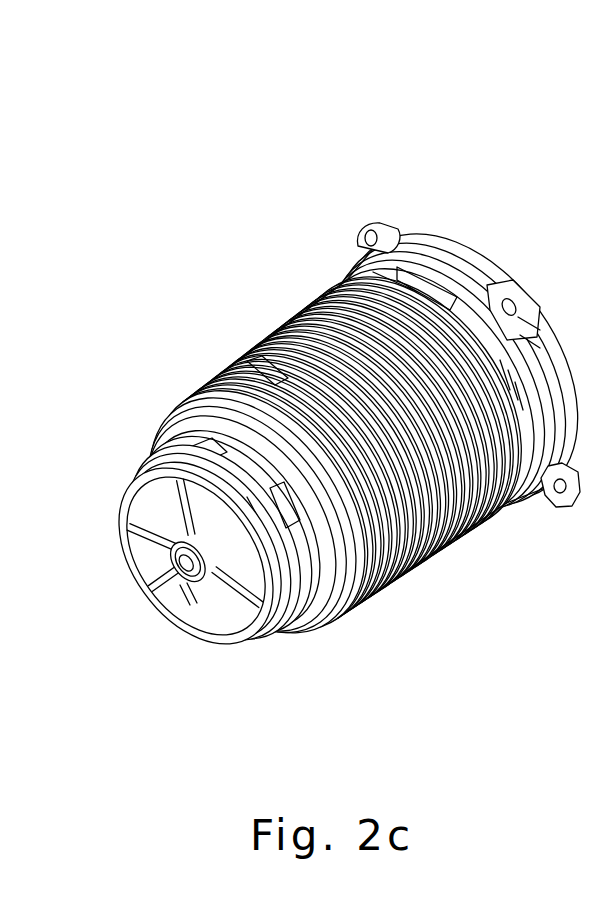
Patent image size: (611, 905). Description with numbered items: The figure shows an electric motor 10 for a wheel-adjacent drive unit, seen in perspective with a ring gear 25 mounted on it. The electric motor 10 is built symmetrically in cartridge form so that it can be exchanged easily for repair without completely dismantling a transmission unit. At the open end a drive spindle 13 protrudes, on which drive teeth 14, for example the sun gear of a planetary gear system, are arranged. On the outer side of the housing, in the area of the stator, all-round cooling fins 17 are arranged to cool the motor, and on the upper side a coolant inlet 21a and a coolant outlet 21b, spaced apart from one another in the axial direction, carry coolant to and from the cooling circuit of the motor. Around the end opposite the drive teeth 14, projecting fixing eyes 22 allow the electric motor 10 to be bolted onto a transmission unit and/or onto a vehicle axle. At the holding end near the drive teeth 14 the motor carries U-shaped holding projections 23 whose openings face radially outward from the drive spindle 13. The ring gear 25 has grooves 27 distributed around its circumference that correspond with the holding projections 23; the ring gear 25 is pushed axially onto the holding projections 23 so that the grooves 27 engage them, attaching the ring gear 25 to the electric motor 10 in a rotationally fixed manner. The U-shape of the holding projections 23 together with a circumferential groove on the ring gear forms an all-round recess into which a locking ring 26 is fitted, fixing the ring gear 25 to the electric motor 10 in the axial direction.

The electric motor 10 is at (263, 268).
The drive spindle 13 is at (142, 596).
The drive teeth 14 is at (222, 617).
The cooling fins 17 is at (452, 548).
The coolant inlet 21a is at (246, 356).
The coolant outlet 21b is at (365, 268).
The fixing eyes 22 is at (514, 282).
The holding projections 23 is at (183, 402).
The ring gear 25 is at (278, 587).
The locking ring 26 is at (330, 622).
The grooves 27 is at (381, 597).